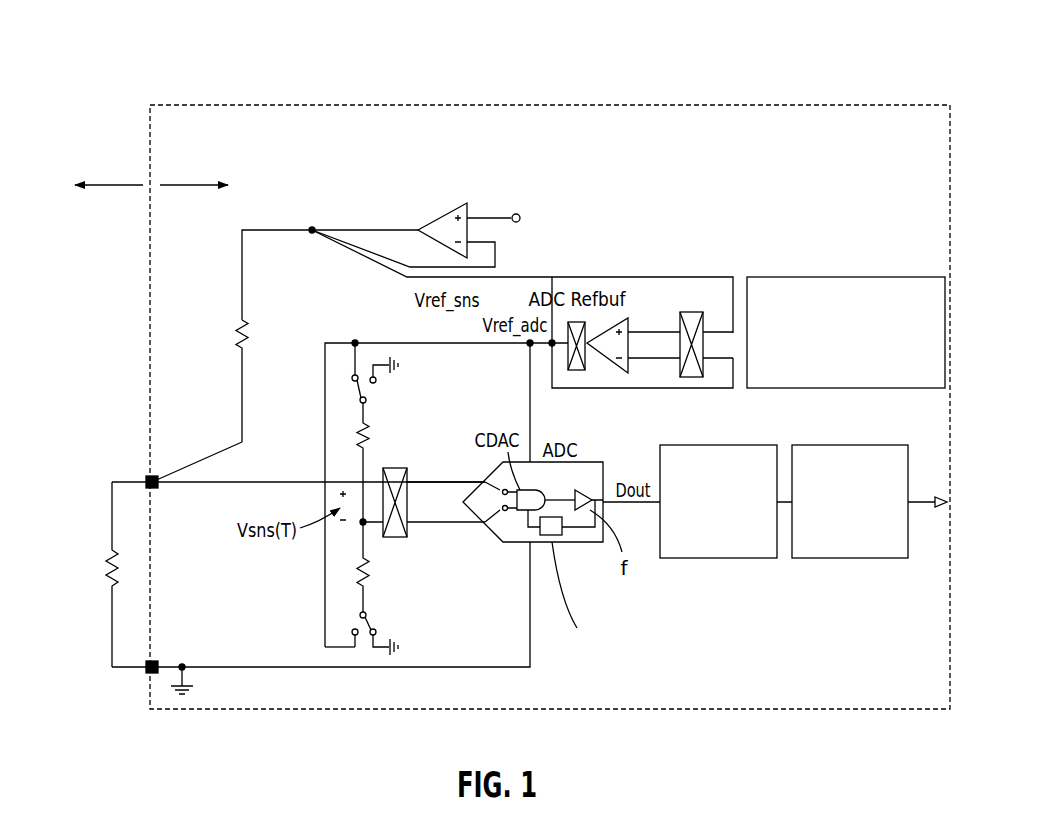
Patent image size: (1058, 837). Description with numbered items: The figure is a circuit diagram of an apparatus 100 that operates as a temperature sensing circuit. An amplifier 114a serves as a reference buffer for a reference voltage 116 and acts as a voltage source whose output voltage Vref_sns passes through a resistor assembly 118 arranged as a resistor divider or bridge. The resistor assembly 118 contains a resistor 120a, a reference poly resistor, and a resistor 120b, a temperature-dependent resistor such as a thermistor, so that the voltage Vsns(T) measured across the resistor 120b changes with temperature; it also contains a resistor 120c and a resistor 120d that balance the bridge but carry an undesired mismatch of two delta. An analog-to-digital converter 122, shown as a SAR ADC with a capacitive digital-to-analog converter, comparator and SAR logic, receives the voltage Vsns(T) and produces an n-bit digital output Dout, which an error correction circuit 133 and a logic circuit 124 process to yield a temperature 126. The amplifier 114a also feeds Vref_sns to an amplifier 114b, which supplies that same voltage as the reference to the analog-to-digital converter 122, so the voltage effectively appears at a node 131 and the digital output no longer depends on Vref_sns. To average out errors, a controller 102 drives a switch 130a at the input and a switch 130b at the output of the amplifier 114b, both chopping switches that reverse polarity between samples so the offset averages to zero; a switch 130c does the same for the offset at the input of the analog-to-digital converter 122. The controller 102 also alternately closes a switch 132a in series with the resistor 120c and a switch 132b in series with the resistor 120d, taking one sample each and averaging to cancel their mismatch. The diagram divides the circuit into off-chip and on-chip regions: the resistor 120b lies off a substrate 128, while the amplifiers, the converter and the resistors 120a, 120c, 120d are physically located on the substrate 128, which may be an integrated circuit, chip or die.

The apparatus 100 is at (235, 83).
The controller 102 is at (847, 275).
The amplifier 114a is at (450, 212).
The amplifier 114b is at (623, 318).
The reference voltage 116 is at (555, 196).
The resistor assembly 118 is at (132, 410).
The resistor 120a is at (215, 307).
The resistor 120b is at (65, 603).
The resistor 120c is at (338, 428).
The resistor 120d is at (338, 578).
The analog-to-digital converter 122 is at (578, 542).
The logic circuit 124 is at (850, 558).
The temperature 126 is at (940, 515).
The substrate 128 is at (760, 172).
The switch 130a is at (692, 379).
The switch 130b is at (577, 372).
The switch 130c is at (407, 525).
The node 131 is at (157, 490).
The switch 132a is at (338, 370).
The switch 132b is at (385, 627).
The error correction circuit 133 is at (718, 558).